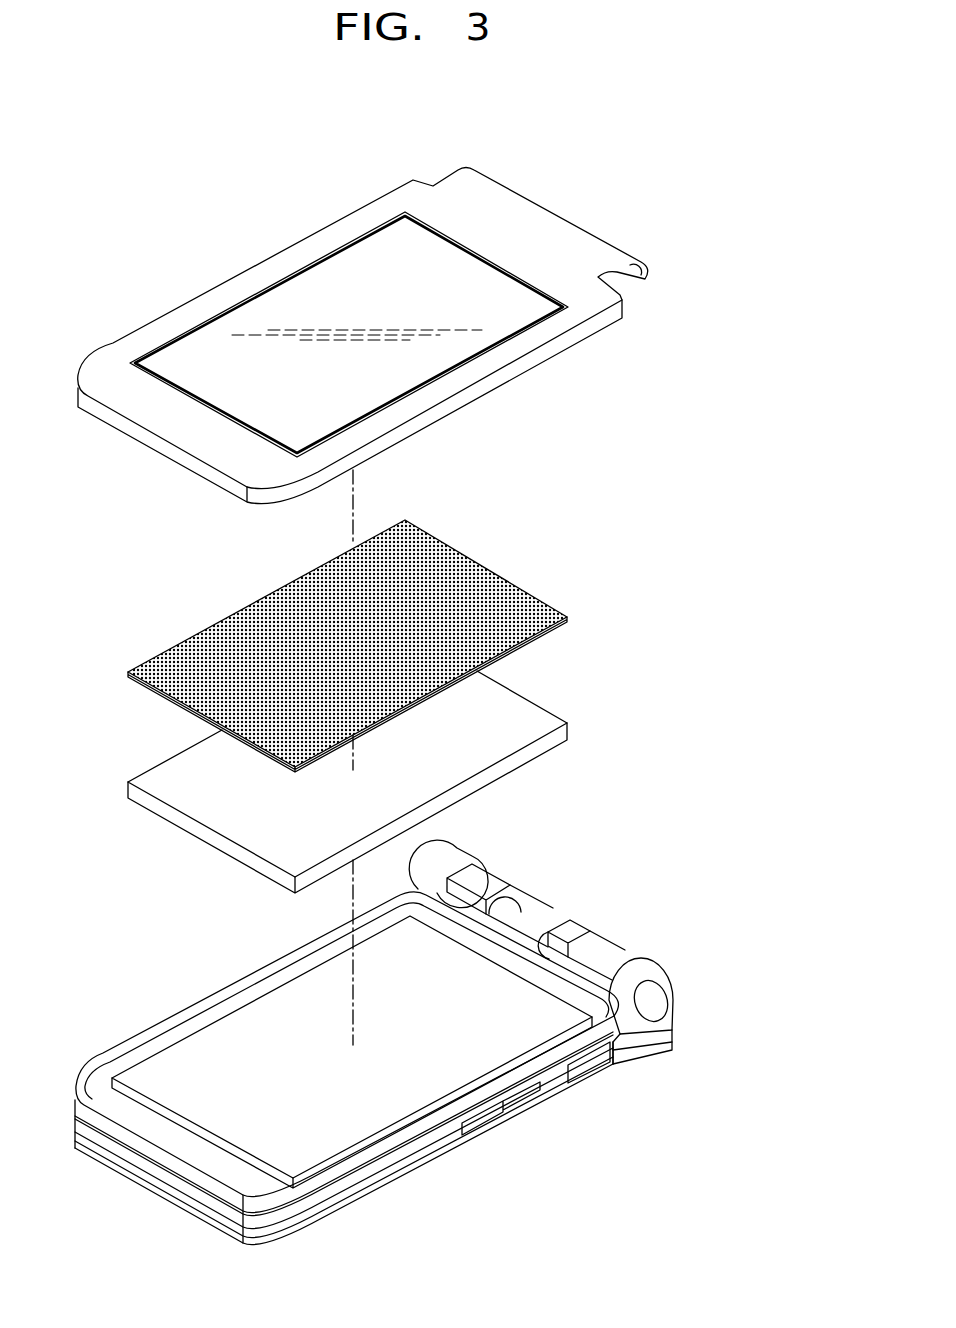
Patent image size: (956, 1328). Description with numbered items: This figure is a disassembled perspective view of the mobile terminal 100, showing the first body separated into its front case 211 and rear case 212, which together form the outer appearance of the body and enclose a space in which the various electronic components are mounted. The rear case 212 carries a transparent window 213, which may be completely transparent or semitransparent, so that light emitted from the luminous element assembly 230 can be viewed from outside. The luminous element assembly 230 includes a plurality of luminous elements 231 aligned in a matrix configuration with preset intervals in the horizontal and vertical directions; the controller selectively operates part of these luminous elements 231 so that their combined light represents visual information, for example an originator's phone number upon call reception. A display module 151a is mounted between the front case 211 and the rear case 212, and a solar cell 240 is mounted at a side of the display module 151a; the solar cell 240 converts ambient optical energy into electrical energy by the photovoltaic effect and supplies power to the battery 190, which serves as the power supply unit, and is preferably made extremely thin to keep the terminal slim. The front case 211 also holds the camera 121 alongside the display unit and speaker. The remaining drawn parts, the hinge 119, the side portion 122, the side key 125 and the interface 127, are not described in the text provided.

The mobile terminal 100 is at (723, 481).
The hinge 119 is at (657, 1002).
The camera 121 is at (635, 1030).
The side surface of body 122 is at (622, 1055).
The side key 125 is at (487, 1120).
The interface unit 127 is at (583, 1072).
The display module 151a is at (250, 1015).
The battery 190 is at (380, 1192).
The front case 211 is at (168, 1030).
The rear case 212 is at (365, 217).
The transparent window 213 is at (315, 273).
The luminous element assembly 230 is at (367, 637).
The luminous elements 231 is at (463, 562).
The solar cell 240 is at (538, 717).